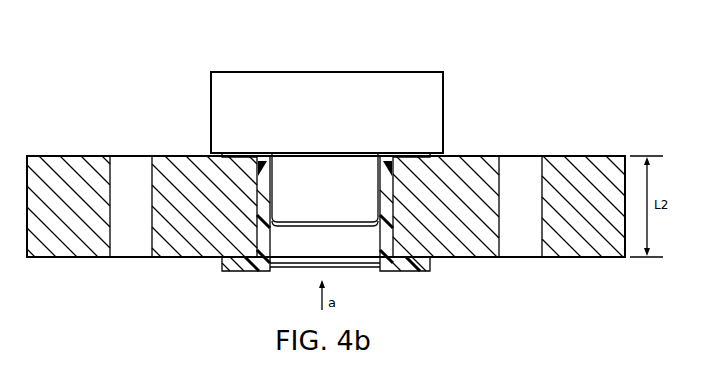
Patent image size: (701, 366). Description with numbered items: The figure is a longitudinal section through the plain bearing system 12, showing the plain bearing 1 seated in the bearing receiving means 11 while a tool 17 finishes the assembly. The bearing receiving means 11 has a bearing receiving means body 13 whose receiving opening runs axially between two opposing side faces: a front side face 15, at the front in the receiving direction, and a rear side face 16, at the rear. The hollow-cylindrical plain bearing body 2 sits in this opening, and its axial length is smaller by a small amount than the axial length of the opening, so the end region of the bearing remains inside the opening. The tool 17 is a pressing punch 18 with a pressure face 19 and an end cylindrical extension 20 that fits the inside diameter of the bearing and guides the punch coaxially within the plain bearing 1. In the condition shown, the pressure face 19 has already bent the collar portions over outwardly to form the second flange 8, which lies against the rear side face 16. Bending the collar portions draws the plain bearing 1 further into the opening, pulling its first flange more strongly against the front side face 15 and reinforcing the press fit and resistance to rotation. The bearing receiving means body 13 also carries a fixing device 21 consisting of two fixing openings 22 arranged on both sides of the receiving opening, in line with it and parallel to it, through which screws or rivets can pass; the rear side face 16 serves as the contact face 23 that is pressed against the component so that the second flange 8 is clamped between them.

The plain bearing 1 is at (326, 222).
The plain bearing body 2 is at (283, 264).
The second flange 8 is at (240, 173).
The bearing receiving means 11 is at (579, 146).
The plain bearing system 12 is at (555, 282).
The bearing receiving means body 13 is at (547, 154).
The front side face 15 is at (160, 262).
The rear side face 16 is at (107, 183).
The tool 17 is at (327, 87).
The pressing punch 18 is at (381, 64).
The pressure face 19 is at (443, 117).
The end cylindrical extension 20 is at (327, 157).
The fixing device 21 is at (508, 162).
The fixing openings 22 is at (125, 262).
The contact face 23 is at (187, 157).